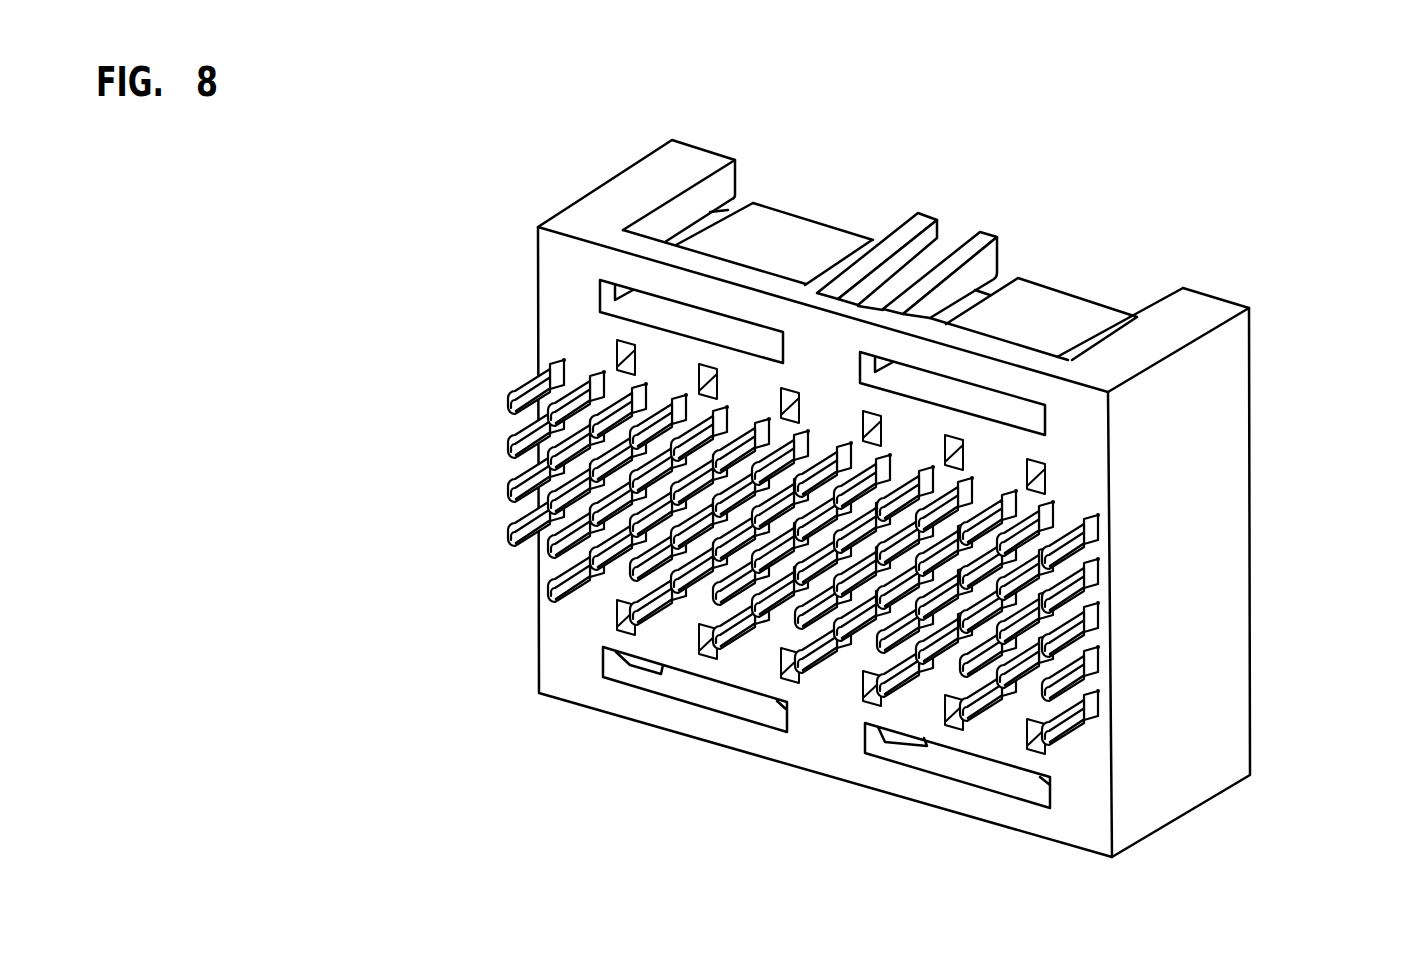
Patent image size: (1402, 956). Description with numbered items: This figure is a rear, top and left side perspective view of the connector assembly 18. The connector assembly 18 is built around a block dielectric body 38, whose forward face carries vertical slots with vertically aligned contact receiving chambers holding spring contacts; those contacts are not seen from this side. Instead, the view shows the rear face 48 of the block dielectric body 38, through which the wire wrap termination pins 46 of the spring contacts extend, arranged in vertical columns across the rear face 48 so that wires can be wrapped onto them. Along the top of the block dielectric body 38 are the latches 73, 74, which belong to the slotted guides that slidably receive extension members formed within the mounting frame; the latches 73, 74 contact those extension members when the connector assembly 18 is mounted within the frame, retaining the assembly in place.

The connector assembly 18 is at (535, 160).
The latch 74 is at (767, 232).
The latch 73 is at (1057, 307).
The block dielectric body 38 is at (1203, 440).
The wire wrap termination pins 46 is at (550, 593).
The rear face 48 is at (558, 662).